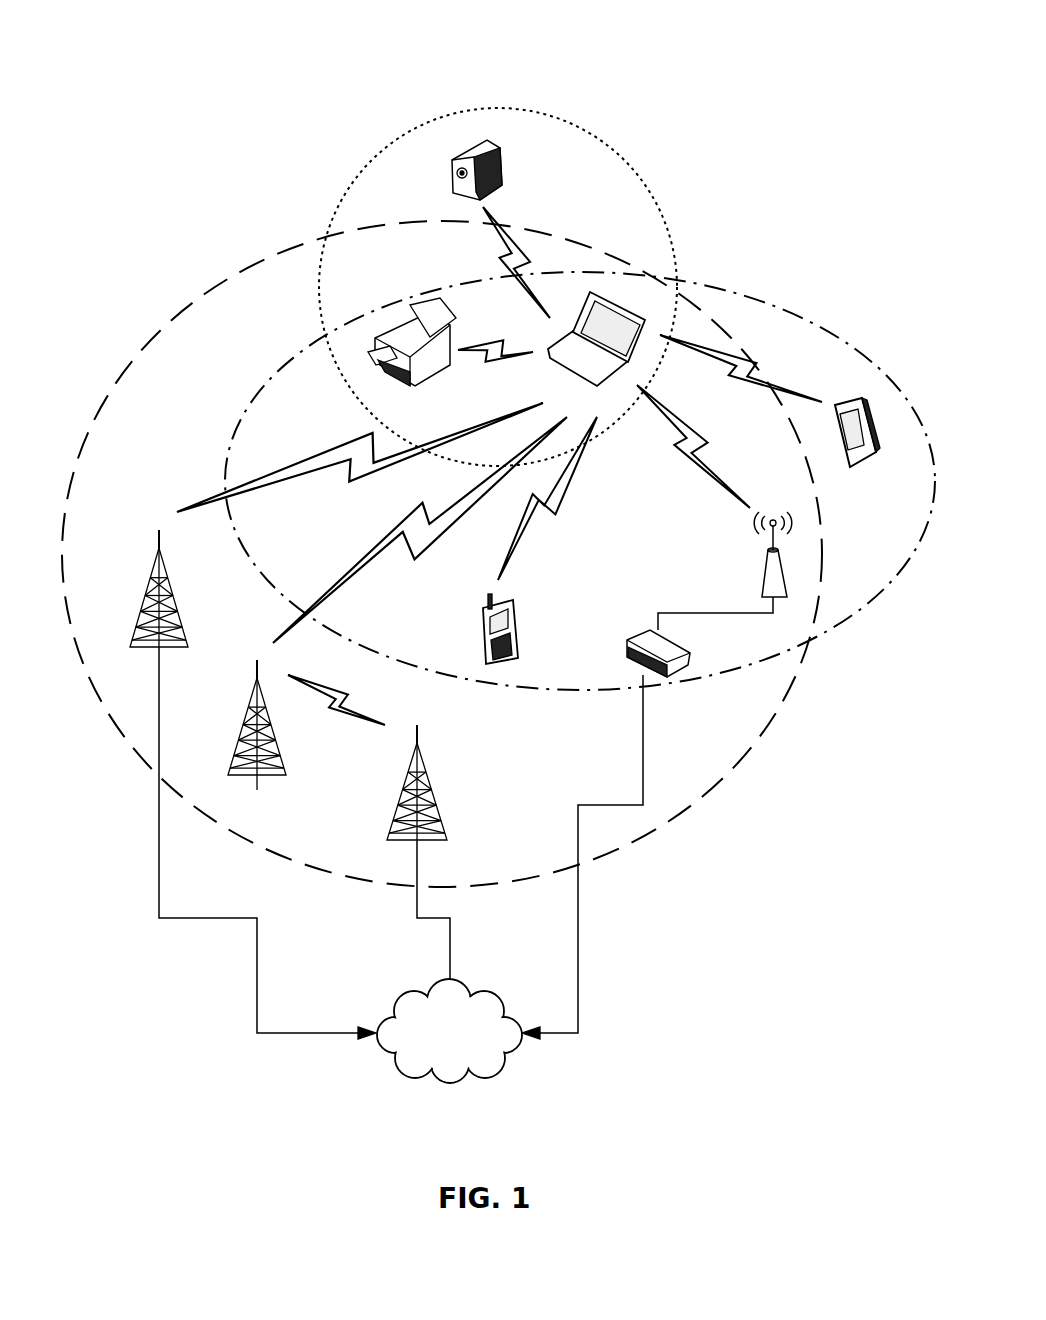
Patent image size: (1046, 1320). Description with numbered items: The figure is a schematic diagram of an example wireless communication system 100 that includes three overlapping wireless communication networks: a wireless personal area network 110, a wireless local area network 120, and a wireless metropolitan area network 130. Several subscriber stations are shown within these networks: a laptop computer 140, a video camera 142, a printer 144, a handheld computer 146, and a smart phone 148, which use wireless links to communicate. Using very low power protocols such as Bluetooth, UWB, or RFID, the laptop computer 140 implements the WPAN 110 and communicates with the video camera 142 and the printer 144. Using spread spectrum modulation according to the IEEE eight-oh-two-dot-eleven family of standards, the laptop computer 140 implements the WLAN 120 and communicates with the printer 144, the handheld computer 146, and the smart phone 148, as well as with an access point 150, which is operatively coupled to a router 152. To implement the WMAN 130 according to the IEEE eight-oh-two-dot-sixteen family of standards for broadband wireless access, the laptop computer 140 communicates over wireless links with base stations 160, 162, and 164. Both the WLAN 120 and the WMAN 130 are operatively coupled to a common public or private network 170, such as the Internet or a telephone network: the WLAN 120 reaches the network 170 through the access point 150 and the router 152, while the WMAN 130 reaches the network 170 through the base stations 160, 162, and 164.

The wireless communication system 100 is at (123, 20).
The wireless personal area network 110 is at (498, 264).
The wireless local area network 120 is at (542, 481).
The wireless metropolitan area network 130 is at (442, 554).
The laptop computer 140 is at (584, 290).
The video camera 142 is at (506, 170).
The printer 144 is at (427, 354).
The handheld computer 146 is at (834, 413).
The smart phone 148 is at (526, 625).
The access point 150 is at (725, 571).
The router 152 is at (606, 825).
The base station 160 is at (231, 784).
The base station 162 is at (234, 725).
The base station 164 is at (396, 854).
The common public or private network 170 is at (424, 1020).